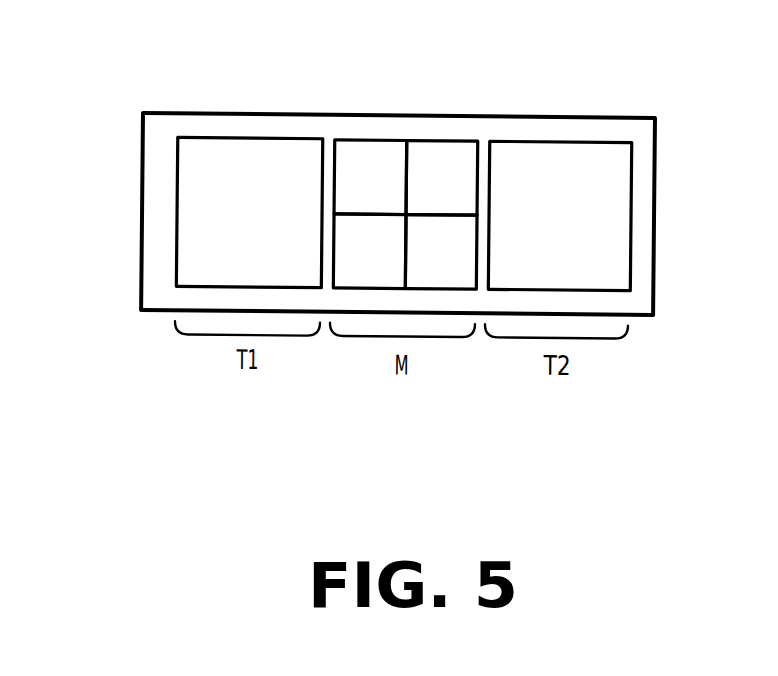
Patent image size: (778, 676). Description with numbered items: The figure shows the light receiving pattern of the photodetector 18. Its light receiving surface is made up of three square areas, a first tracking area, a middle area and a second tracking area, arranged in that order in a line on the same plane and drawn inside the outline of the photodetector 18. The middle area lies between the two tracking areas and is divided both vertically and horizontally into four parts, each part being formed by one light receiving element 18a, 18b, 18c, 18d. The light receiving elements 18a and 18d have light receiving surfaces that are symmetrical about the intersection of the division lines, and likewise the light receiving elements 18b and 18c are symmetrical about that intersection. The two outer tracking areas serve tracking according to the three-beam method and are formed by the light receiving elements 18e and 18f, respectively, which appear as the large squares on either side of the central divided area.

The photodetector 18 is at (134, 142).
The light receiving element 18a is at (365, 152).
The light receiving element 18b is at (444, 152).
The light receiving element 18c is at (365, 262).
The light receiving element 18d is at (442, 262).
The light receiving element 18e is at (230, 140).
The light receiving element 18f is at (562, 150).